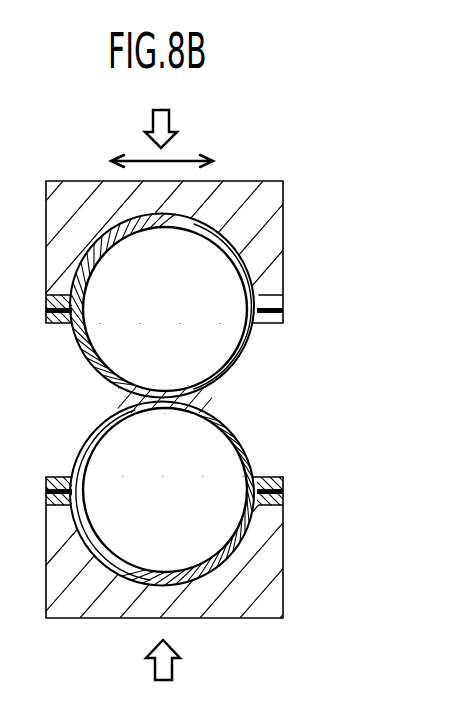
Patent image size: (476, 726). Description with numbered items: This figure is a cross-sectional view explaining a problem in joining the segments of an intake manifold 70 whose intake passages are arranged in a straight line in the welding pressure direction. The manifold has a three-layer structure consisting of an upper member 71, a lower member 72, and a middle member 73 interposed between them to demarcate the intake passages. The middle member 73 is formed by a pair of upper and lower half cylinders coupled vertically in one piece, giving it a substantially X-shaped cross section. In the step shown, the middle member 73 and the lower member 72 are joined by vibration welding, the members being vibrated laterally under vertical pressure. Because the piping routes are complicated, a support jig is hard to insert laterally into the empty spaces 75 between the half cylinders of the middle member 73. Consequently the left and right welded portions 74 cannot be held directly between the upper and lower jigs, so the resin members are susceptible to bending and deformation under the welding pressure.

The intake manifold 70 is at (248, 250).
The upper member 71 is at (251, 277).
The lower member 72 is at (268, 553).
The middle member 73 is at (247, 343).
The welded portions 74 is at (264, 470).
The empty spaces 75 is at (260, 401).